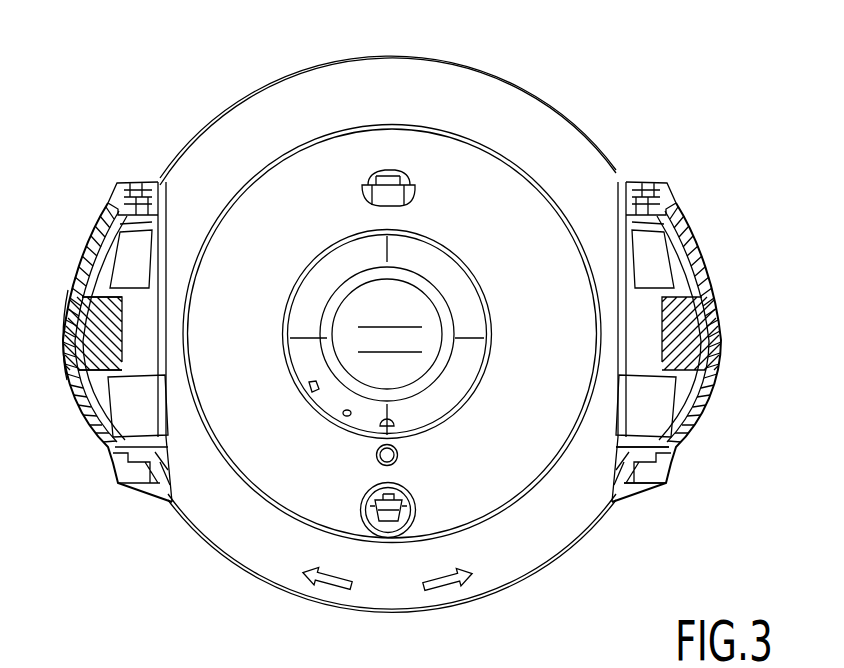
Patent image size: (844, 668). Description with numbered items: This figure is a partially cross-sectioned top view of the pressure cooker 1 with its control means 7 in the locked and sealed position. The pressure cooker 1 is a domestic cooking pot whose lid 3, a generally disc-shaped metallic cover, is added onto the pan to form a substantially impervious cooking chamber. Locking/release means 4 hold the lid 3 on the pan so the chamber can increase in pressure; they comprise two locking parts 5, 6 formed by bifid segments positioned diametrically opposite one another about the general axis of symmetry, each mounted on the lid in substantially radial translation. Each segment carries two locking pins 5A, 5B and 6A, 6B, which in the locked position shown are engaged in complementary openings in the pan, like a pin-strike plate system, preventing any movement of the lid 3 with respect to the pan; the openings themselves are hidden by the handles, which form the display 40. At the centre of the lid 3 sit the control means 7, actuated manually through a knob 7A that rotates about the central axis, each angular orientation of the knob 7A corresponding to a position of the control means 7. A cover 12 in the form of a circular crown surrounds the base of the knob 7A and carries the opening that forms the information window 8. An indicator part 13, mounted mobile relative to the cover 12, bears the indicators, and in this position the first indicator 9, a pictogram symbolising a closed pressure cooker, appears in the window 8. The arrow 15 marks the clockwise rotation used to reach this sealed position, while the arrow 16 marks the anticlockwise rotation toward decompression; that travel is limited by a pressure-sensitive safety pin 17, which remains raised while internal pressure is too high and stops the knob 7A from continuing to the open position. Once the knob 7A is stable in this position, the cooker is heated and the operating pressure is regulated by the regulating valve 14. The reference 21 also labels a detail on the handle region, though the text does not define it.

The pressure cooker 1 is at (635, 132).
The lid 3 is at (288, 192).
The locking/release means 4 is at (100, 429).
The locking part 5 is at (642, 412).
The locking pin 5A is at (650, 455).
The locking pin 5B is at (652, 284).
The locking part 6 is at (104, 396).
The locking pin 6A is at (105, 446).
The locking pin 6B is at (123, 260).
The control means 7 is at (424, 315).
The knob 7A is at (353, 338).
The information window 8 is at (407, 491).
The first indicator 9 is at (415, 510).
The cover 12 is at (505, 205).
The indicator part 13 is at (390, 533).
The regulating valve 14 is at (381, 166).
The arrow 15 is at (333, 586).
The arrow 16 is at (445, 588).
The safety pin 17 is at (375, 464).
The handle outer edge 21 is at (64, 350).
The display 40 is at (62, 285).